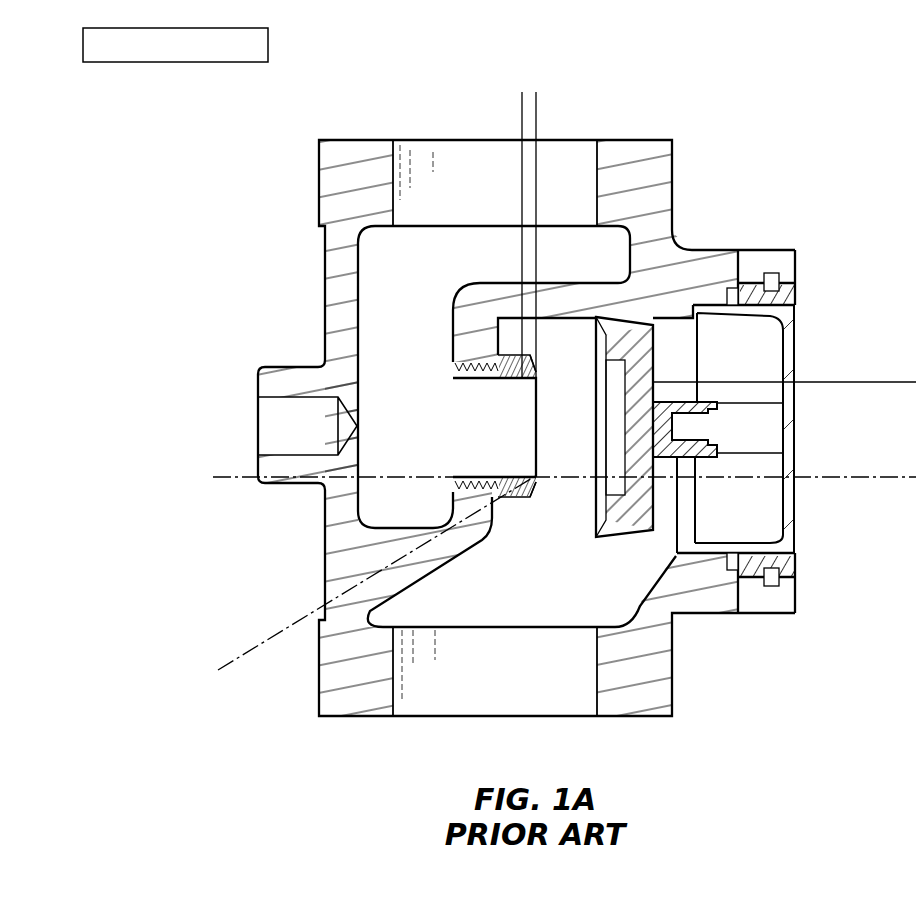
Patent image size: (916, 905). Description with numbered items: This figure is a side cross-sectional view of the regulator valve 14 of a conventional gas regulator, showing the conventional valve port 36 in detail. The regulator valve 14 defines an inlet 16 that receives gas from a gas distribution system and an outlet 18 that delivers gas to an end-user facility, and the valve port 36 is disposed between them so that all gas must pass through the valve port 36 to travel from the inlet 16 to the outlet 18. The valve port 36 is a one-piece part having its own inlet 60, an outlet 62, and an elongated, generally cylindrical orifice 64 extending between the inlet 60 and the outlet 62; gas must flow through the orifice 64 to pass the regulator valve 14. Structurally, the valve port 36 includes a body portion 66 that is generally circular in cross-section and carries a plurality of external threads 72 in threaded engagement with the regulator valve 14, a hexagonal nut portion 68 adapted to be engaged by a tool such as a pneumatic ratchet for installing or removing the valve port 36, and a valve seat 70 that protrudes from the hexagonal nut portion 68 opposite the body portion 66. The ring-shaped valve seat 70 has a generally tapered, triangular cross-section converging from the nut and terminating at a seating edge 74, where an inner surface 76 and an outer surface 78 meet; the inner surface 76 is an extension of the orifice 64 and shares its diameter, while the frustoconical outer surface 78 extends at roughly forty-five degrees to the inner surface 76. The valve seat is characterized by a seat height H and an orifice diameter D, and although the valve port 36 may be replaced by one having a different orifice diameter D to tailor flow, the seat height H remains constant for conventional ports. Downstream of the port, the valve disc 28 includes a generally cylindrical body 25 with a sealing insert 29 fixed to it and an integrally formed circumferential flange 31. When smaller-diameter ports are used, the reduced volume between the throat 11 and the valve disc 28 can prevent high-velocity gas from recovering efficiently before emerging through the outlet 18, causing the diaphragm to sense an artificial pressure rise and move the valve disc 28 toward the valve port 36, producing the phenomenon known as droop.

The throat 11 is at (457, 366).
The regulator valve 14 is at (662, 130).
The inlet 16 is at (448, 158).
The outlet 18 is at (428, 685).
The body 25 is at (604, 452).
The valve disc 28 is at (665, 358).
The sealing insert 29 is at (600, 487).
The circumferential flange 31 is at (602, 407).
The valve port 36 is at (468, 432).
The inlet 60 is at (450, 368).
The outlet 62 is at (522, 555).
The orifice 64 is at (511, 492).
The body portion 66 is at (486, 400).
The hexagonal nut portion 68 is at (499, 316).
The valve seat 70 is at (537, 375).
The external threads 72 is at (468, 357).
The seating edge 74 is at (541, 483).
The inner surface 76 is at (537, 478).
The outer surface 78 is at (528, 500).
The seat height H is at (470, 103).
The orifice diameter D is at (850, 394).